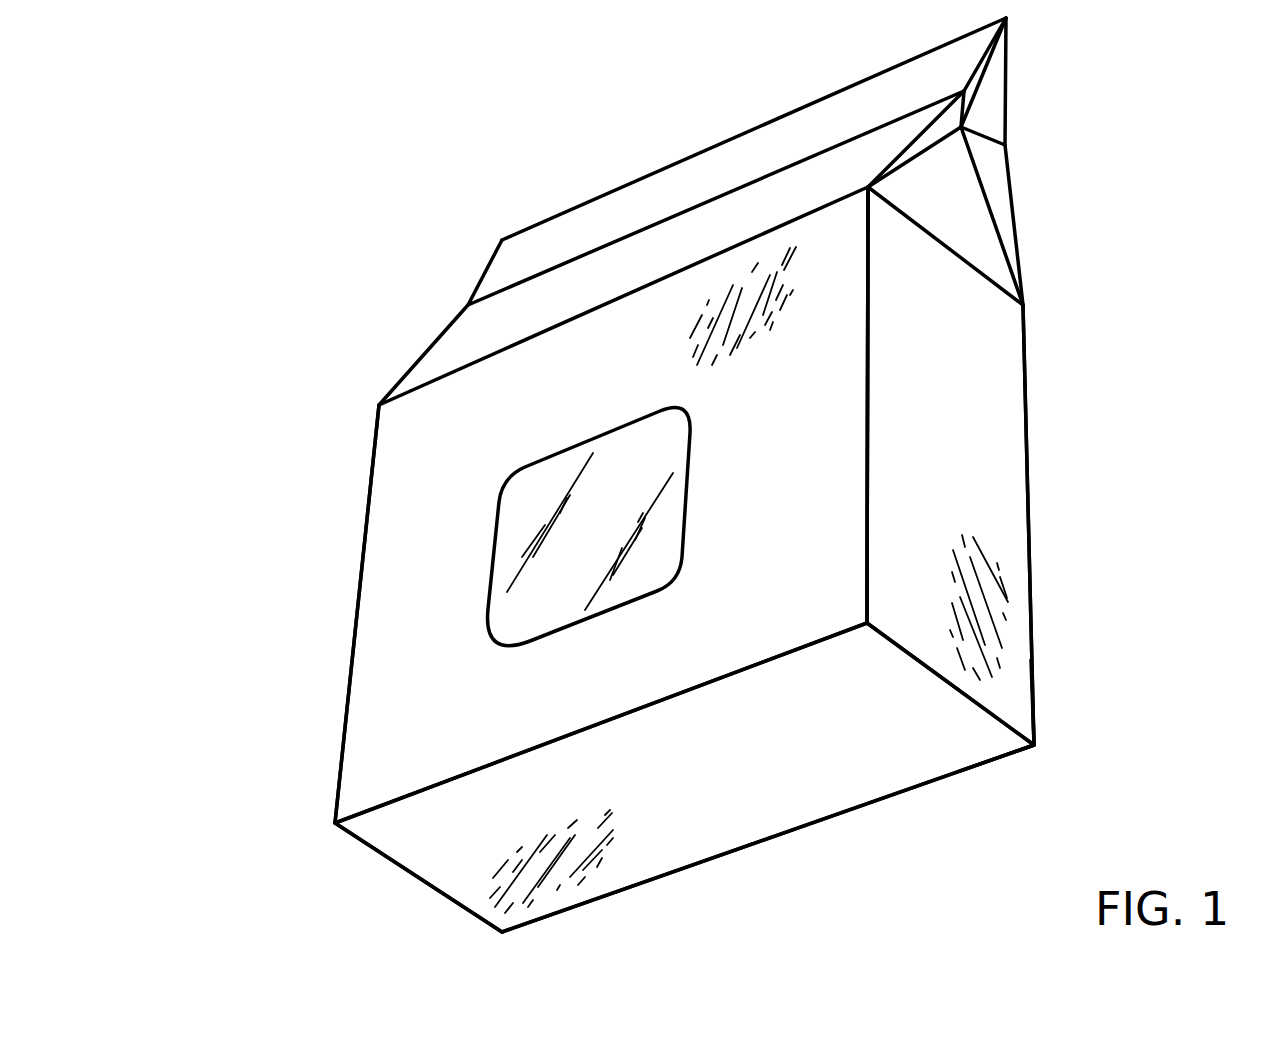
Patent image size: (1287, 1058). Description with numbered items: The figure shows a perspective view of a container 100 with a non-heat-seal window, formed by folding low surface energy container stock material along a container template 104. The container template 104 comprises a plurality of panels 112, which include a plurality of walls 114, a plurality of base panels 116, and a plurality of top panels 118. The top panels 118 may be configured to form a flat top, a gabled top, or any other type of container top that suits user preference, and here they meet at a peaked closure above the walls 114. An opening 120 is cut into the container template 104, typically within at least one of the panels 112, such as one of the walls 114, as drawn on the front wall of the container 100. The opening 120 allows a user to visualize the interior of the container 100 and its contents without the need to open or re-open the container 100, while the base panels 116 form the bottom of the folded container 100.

The container 100 is at (290, 157).
The container template 104 is at (1032, 303).
The panels 112 is at (1000, 760).
The walls 114 is at (455, 725).
The base panels 116 is at (708, 803).
The top panels 118 is at (645, 278).
The opening 120 is at (493, 548).